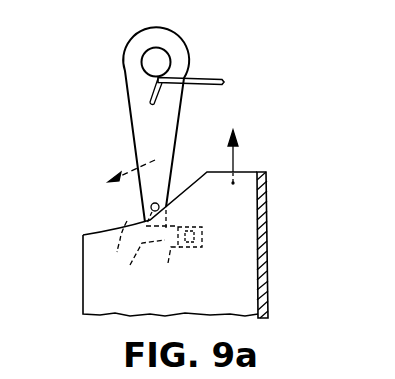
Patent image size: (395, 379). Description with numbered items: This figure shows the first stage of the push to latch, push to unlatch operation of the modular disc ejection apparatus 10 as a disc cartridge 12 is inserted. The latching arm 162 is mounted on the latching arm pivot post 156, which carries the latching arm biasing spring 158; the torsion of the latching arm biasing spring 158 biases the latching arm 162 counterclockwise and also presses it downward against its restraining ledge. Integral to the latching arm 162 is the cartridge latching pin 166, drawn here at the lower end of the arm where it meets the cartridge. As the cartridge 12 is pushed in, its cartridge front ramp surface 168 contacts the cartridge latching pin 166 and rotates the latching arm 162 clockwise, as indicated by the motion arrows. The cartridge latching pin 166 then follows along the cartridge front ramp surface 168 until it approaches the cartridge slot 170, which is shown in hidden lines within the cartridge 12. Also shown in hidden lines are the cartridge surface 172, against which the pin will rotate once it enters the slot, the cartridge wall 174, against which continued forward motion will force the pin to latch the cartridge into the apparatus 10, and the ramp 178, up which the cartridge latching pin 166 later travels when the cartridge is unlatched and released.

The modular disc ejection apparatus 10 is at (268, 212).
The disc cartridge 12 is at (83, 271).
The latching arm pivot post 156 is at (165, 62).
The latching arm biasing spring 158 is at (223, 83).
The latching arm 162 is at (138, 135).
The cartridge latching pin 166 is at (151, 207).
The cartridge front ramp surface 168 is at (197, 180).
The cartridge slot 170 is at (119, 236).
The cartridge surface 172 is at (146, 259).
The cartridge wall 174 is at (169, 251).
The ramp 178 is at (204, 236).